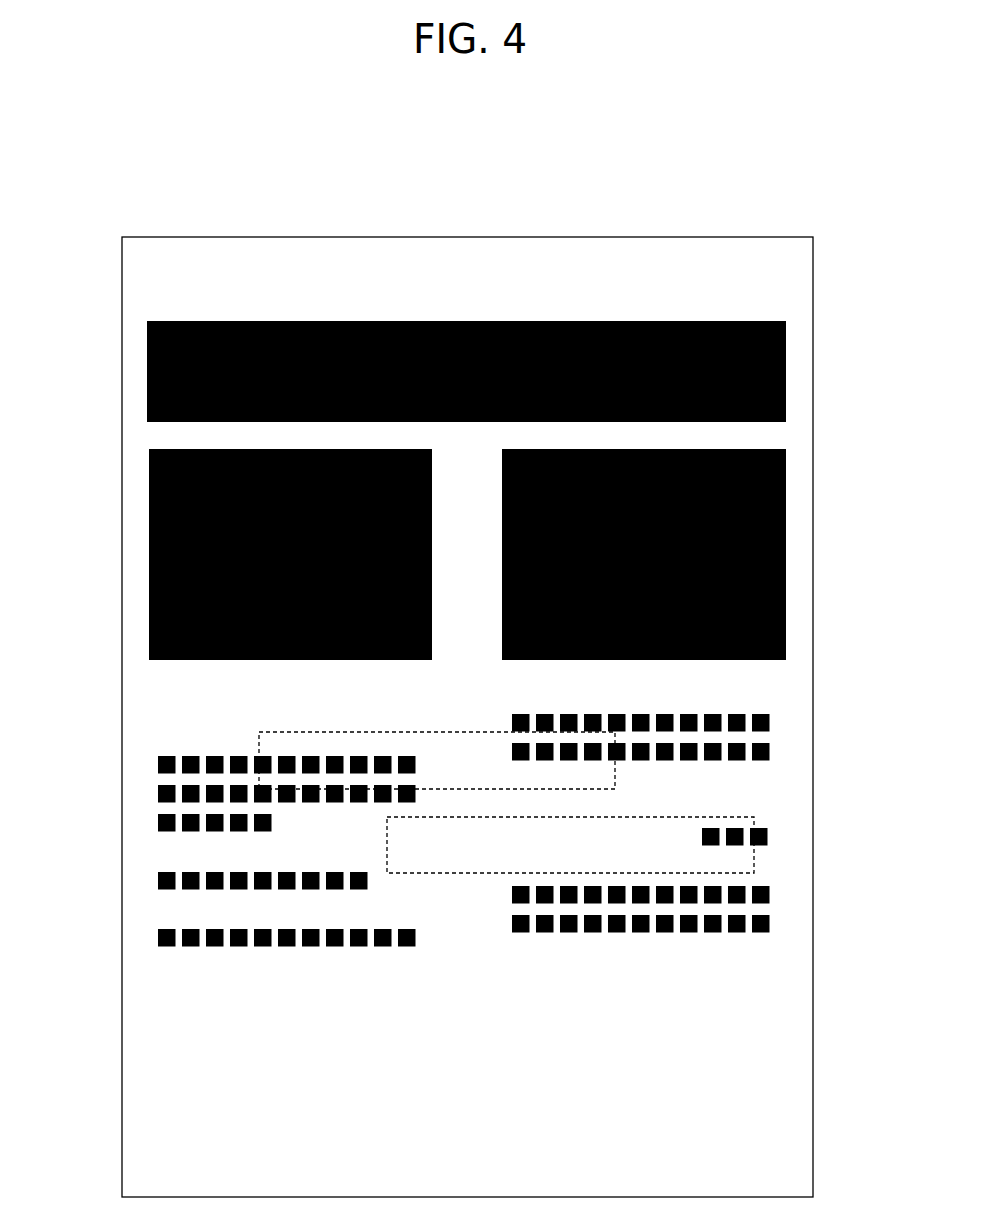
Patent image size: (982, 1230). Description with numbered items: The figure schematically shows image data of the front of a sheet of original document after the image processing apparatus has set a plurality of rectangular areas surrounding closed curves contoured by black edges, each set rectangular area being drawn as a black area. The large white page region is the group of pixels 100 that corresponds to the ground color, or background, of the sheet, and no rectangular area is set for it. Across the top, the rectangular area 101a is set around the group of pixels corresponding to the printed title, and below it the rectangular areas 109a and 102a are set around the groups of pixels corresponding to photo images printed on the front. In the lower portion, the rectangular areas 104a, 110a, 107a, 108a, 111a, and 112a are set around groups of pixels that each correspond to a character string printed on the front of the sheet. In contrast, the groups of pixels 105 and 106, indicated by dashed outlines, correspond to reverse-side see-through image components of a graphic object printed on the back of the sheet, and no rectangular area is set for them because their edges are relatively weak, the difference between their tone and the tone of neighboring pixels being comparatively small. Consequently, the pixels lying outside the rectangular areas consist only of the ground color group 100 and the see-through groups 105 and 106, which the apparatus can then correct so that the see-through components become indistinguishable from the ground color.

The group of pixels corresponding to ground color 100 is at (790, 302).
The rectangular area for title pixel group 101a is at (786, 368).
The rectangular area for photo image pixel group 102a is at (786, 545).
The rectangular area for character string pixel group 104a is at (769, 714).
The group of pixels corresponding to reverse-side see-through image components 105 is at (615, 773).
The group of pixels corresponding to reverse-side see-through image components 106 is at (754, 817).
The rectangular area for character string pixel group 107a is at (769, 835).
The rectangular area for character string pixel group 108a is at (769, 893).
The rectangular area for photo image pixel group 109a is at (149, 565).
The rectangular area for character string pixel group 110a is at (158, 762).
The rectangular area for character string pixel group 111a is at (158, 875).
The rectangular area for character string pixel group 112a is at (158, 932).